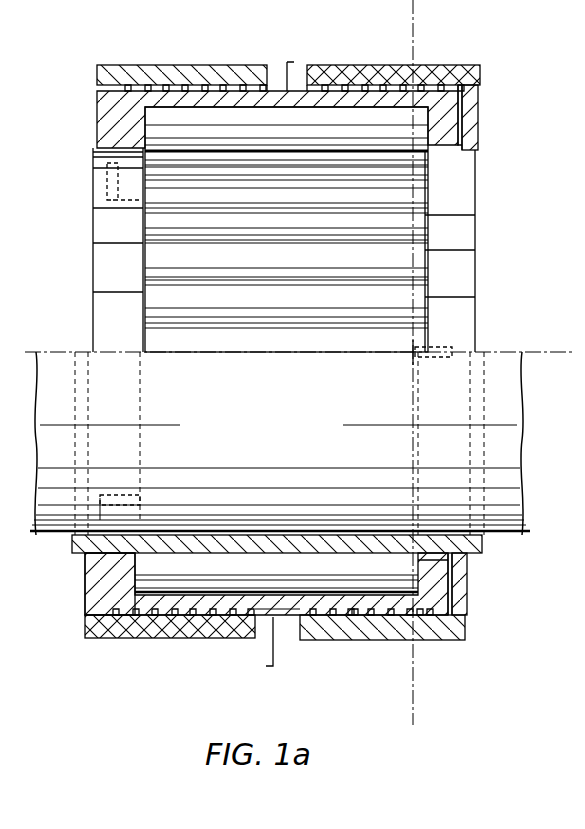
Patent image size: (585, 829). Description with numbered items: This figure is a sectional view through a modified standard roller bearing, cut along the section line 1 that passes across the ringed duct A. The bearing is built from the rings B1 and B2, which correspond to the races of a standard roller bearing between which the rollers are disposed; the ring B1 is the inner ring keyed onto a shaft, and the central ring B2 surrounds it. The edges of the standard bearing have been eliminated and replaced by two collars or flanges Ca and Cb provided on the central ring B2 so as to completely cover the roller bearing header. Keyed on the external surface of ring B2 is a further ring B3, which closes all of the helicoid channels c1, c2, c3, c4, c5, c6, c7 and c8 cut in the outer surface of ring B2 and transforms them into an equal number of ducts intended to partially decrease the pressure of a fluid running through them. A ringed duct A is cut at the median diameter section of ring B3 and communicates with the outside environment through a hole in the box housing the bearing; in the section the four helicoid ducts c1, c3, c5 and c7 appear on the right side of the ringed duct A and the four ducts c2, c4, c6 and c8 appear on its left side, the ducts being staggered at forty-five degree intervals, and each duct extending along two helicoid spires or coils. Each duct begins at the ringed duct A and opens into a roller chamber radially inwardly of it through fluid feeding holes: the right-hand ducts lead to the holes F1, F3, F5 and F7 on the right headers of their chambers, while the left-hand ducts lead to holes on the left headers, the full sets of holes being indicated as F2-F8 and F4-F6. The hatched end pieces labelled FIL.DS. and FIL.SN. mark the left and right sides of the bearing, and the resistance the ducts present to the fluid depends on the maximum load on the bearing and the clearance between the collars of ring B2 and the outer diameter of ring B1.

The section line 1 is at (402, 15).
The left filter cap FIL.DS. is at (103, 66).
The right filter cap FIL.SN. is at (476, 68).
The fluid feeding hole F1 is at (445, 147).
The ringed duct A is at (276, 360).
The helicoid channel c1 is at (324, 85).
The helicoid channel c2 is at (242, 85).
The helicoid channel c3 is at (344, 85).
The helicoid channel c4 is at (166, 85).
The helicoid channel c5 is at (345, 85).
The helicoid channel c6 is at (148, 85).
The helicoid channel c7 is at (382, 85).
The helicoid channel c8 is at (126, 85).
The collar Ca is at (115, 272).
The collar Cb is at (450, 282).
The fluid feeding holes F2-F8 is at (107, 200).
The fluid feeding hole F3 is at (418, 357).
The fluid feeding holes F4-F6 is at (423, 490).
The fluid feeding hole F5 is at (455, 567).
The fluid feeding hole F7 is at (422, 353).
The ring B1 is at (75, 545).
The central ring B2 is at (107, 598).
The ring B3 is at (100, 628).